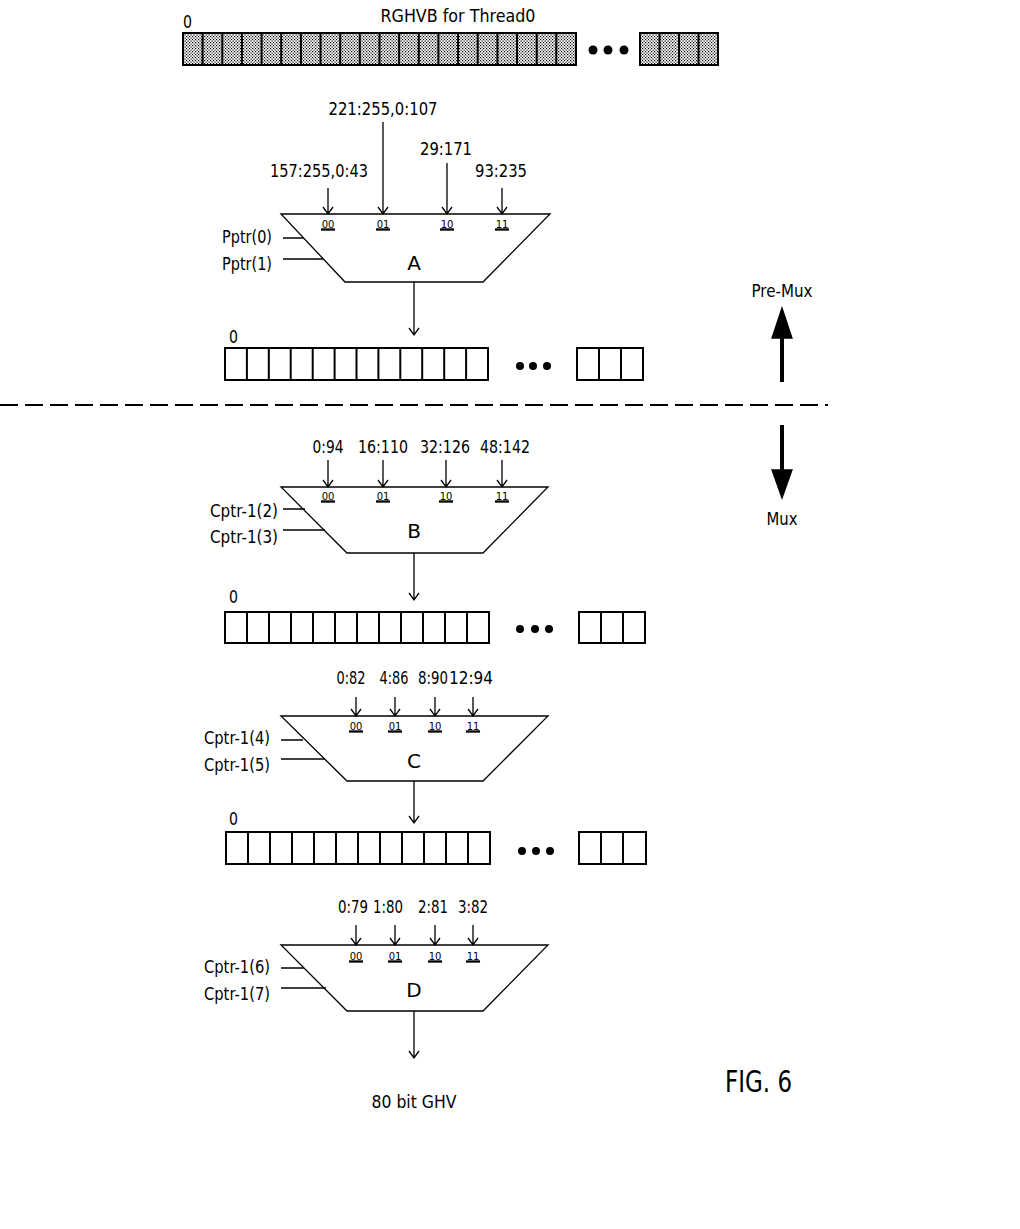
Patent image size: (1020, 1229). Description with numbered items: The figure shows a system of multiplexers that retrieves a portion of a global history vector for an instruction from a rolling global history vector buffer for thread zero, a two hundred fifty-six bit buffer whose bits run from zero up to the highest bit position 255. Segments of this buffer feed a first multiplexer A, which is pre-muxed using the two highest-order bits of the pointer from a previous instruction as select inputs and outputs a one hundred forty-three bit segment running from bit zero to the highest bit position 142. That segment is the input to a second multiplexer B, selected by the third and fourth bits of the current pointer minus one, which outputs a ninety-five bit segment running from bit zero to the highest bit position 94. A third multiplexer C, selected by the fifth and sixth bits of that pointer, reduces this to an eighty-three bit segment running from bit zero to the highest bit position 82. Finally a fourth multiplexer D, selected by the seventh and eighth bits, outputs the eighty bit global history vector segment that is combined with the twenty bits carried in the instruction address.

The 256-bit RGHVB register for Thread0 255 is at (452, 38).
The 143-bit pre-mux output vector of mux A 142 is at (435, 353).
The 95-bit output vector of mux B 94 is at (435, 614).
The 83-bit output vector of mux C 82 is at (436, 836).